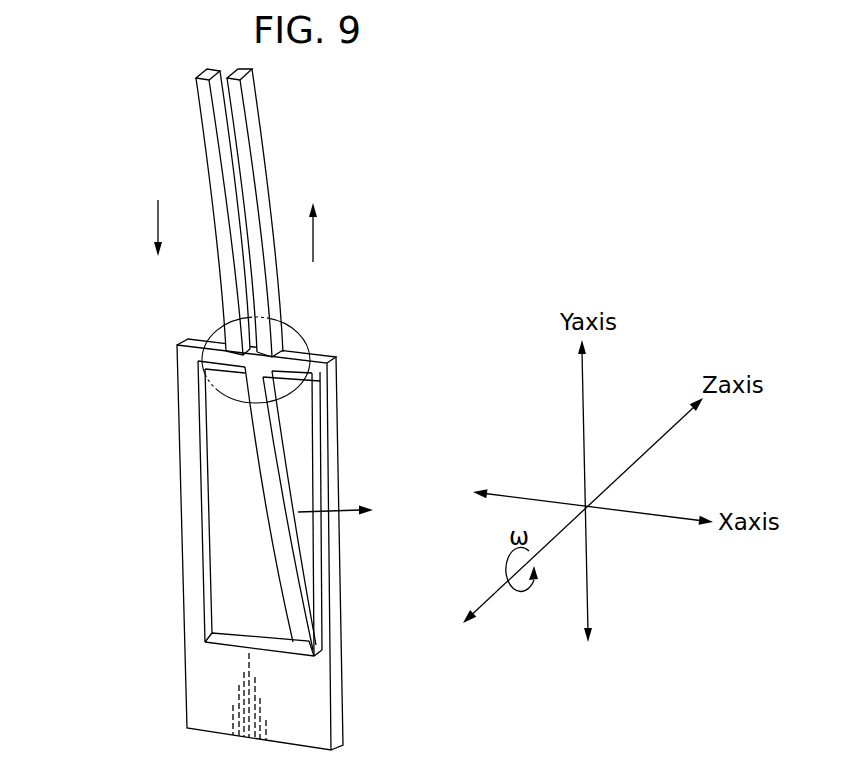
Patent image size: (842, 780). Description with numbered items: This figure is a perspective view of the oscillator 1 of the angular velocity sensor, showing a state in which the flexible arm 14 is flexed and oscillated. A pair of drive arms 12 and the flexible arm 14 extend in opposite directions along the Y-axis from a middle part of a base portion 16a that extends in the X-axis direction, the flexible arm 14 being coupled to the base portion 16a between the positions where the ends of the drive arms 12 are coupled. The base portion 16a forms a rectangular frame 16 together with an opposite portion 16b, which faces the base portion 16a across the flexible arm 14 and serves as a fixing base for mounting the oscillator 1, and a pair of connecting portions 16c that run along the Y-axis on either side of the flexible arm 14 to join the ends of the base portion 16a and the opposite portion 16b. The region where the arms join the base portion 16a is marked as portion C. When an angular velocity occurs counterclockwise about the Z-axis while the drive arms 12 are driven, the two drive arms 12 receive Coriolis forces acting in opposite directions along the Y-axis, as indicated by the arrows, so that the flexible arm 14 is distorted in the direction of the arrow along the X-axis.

The oscillator 1 is at (128, 367).
The drive arms 12 is at (240, 126).
The flexible arm 14 is at (268, 455).
The frame 16 is at (165, 478).
The base portion 16a is at (290, 388).
The opposite portion 16b is at (302, 703).
The connecting portions 16c is at (193, 430).
The portion C is at (293, 330).